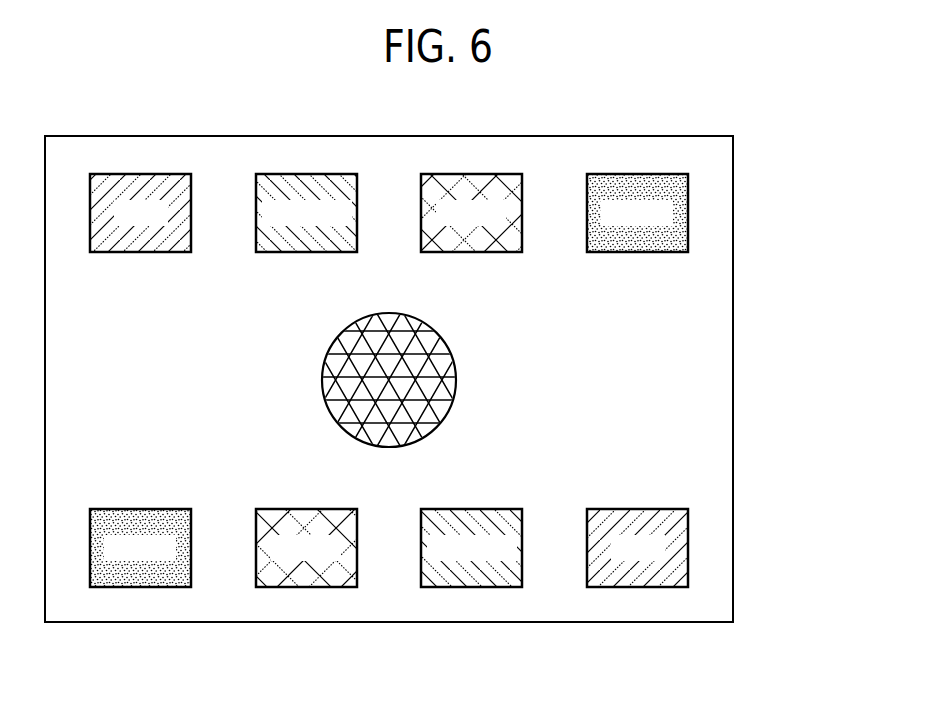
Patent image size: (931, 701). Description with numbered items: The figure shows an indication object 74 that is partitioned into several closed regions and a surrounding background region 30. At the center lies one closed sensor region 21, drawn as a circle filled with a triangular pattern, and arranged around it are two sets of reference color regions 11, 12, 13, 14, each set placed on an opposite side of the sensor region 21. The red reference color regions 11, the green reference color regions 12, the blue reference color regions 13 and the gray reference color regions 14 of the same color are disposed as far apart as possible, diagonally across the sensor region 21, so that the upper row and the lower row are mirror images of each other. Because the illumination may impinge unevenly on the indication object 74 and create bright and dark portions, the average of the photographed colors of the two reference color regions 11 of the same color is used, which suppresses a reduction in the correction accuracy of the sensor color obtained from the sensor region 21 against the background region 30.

The reference color region 11 is at (132, 253).
The reference color region 12 is at (280, 253).
The reference color region 13 is at (488, 253).
The reference color region 14 is at (643, 253).
The sensor region 21 is at (322, 383).
The background region 30 is at (570, 394).
The indication object 74 is at (740, 155).